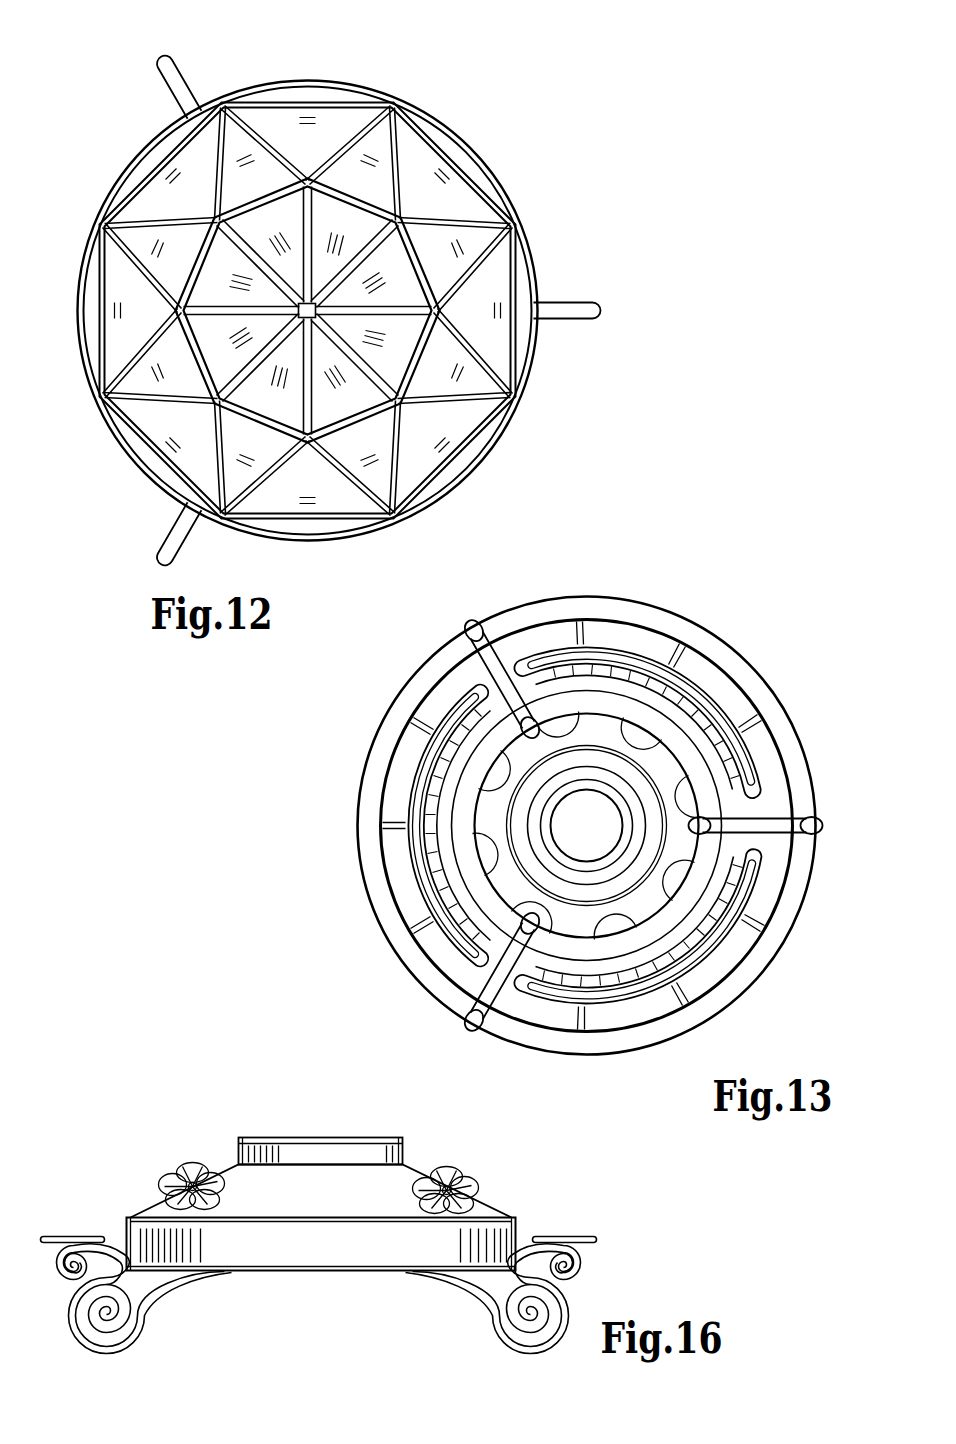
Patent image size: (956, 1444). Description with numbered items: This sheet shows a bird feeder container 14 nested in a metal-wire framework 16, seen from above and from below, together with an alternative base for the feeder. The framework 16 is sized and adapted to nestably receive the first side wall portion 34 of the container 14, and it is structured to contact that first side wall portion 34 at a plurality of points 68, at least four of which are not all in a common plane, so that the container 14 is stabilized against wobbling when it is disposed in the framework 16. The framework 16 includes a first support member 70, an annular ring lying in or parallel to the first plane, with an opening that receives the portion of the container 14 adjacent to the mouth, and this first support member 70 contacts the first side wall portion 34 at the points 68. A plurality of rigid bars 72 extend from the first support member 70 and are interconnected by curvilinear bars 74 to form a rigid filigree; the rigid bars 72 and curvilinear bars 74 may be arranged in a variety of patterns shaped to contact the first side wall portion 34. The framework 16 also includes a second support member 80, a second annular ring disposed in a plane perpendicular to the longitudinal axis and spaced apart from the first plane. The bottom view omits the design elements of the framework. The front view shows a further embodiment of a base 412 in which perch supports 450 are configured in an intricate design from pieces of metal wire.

In FIG. 12, the container 14 is at (372, 170).
In FIG. 12, the framework 16 is at (572, 250).
In FIG. 13, the framework 16 is at (714, 616).
In FIG. 13, the first side wall portion 34 is at (396, 869).
In FIG. 12, the points 68 is at (268, 94).
In FIG. 13, the points 68 is at (548, 630).
In FIG. 13, the first support member 70 is at (462, 798).
In FIG. 12, the rigid bars 72 is at (158, 60).
In FIG. 13, the rigid bars 72 is at (466, 624).
In FIG. 13, the curvilinear bars 74 is at (598, 642).
In FIG. 12, the second support member 80 is at (483, 446).
In FIG. 16, the base 412 is at (252, 1118).
In FIG. 16, the perch supports 450 is at (168, 1335).